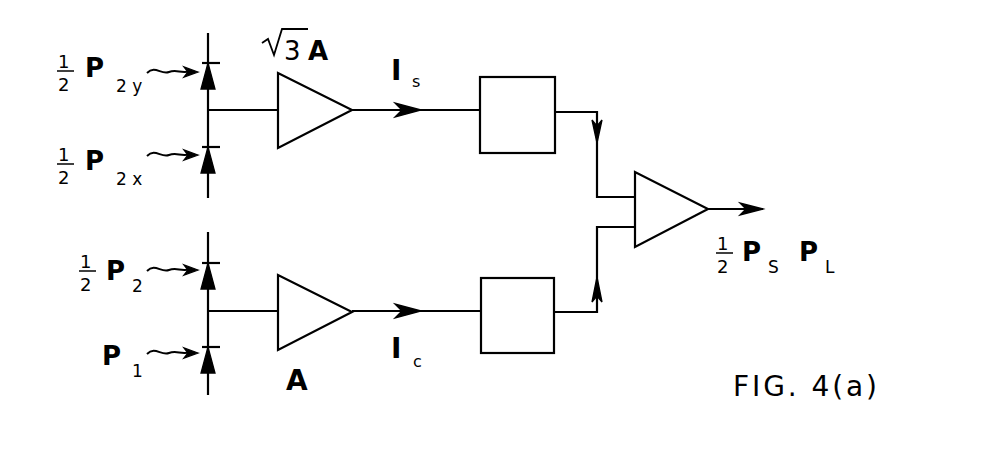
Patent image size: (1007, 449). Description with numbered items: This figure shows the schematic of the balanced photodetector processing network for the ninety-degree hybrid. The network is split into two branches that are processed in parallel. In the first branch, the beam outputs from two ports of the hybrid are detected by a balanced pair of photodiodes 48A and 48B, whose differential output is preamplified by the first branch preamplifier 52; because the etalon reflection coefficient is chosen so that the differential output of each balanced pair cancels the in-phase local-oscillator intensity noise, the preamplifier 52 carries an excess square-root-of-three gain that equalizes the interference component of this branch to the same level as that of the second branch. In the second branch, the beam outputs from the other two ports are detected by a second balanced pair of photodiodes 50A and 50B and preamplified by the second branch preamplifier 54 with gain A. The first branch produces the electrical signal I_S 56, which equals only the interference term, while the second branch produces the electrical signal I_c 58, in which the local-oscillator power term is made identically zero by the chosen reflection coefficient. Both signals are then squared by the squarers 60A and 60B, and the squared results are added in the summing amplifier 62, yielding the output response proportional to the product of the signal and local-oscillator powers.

The photodiode 48A is at (205, 62).
The photodiode 48B is at (216, 148).
The photodiode 50A is at (209, 263).
The photodiode 50B is at (216, 348).
The first branch preamplifier 52 is at (324, 135).
The second branch preamplifier 54 is at (318, 287).
The first branch electrical signal I_S 56 is at (407, 119).
The second branch electrical signal I_c 58 is at (405, 302).
The squarer 60A is at (514, 153).
The squarer 60B is at (512, 278).
The summing amplifier 62 is at (656, 176).